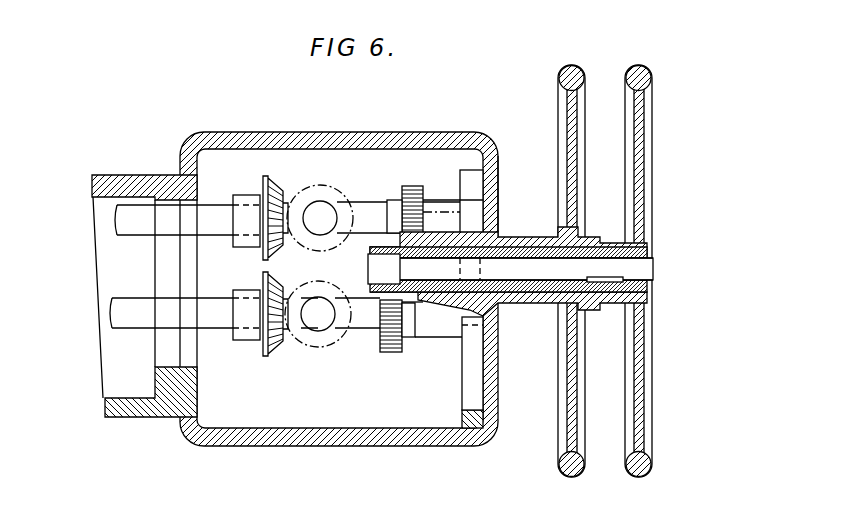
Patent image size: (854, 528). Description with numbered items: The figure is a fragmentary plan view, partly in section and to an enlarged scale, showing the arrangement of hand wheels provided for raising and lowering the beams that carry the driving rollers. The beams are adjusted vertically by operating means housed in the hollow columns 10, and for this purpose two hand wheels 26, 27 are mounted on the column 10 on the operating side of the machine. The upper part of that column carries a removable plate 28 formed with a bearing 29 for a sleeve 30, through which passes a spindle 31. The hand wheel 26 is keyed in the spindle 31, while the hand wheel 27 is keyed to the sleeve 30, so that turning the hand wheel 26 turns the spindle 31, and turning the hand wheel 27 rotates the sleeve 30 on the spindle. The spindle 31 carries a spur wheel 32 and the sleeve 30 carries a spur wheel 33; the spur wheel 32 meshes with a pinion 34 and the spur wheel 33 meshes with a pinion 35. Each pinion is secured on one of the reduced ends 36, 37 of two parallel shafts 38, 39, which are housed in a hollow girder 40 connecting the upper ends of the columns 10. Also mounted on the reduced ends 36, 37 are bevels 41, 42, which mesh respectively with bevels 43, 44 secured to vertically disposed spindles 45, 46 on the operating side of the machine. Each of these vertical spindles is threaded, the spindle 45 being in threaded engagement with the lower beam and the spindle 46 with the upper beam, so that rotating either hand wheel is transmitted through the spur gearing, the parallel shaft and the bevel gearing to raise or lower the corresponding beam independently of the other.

The hollow column 10 is at (306, 132).
The hand wheel 26 is at (651, 168).
The hand wheel 27 is at (584, 168).
The removable plate 28 is at (498, 173).
The bearing 29 is at (500, 235).
The sleeve 30 is at (523, 305).
The spindle 31 is at (510, 269).
The spur wheel 32 is at (318, 303).
The spur wheel 33 is at (416, 310).
The pinion 34 is at (389, 353).
The pinion 35 is at (419, 186).
The reduced end 36 is at (362, 318).
The reduced end 37 is at (336, 377).
The parallel shaft 38 is at (150, 330).
The parallel shaft 39 is at (213, 204).
The hollow girder 40 is at (133, 173).
The bevel 41 is at (258, 345).
The bevel 42 is at (276, 191).
The bevel 43 is at (306, 282).
The bevel 44 is at (332, 187).
The vertically disposed spindle 45 is at (306, 333).
The vertically disposed spindle 46 is at (334, 209).